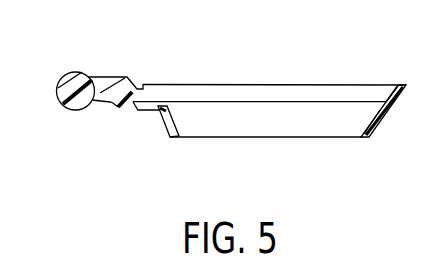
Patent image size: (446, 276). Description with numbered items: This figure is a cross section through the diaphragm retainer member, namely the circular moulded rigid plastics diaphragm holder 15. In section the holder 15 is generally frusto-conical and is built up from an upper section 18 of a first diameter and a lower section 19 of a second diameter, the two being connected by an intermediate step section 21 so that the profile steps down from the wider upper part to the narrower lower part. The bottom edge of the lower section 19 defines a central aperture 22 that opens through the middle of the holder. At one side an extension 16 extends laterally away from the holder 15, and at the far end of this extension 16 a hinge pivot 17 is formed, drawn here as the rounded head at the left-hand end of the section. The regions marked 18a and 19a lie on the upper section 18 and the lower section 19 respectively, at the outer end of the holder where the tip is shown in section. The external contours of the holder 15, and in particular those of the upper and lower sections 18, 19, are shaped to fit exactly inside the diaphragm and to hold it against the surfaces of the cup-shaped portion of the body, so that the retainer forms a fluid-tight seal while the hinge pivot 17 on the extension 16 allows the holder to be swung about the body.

The diaphragm holder 15 is at (175, 84).
The extension 16 is at (113, 104).
The hinge pivot 17 is at (73, 87).
The upper section 18 is at (400, 88).
The tip upper face 18a is at (387, 106).
The lower section 19 is at (374, 125).
The slanted wall 19a is at (367, 118).
The intermediate step section 21 is at (383, 100).
The central aperture 22 is at (200, 136).